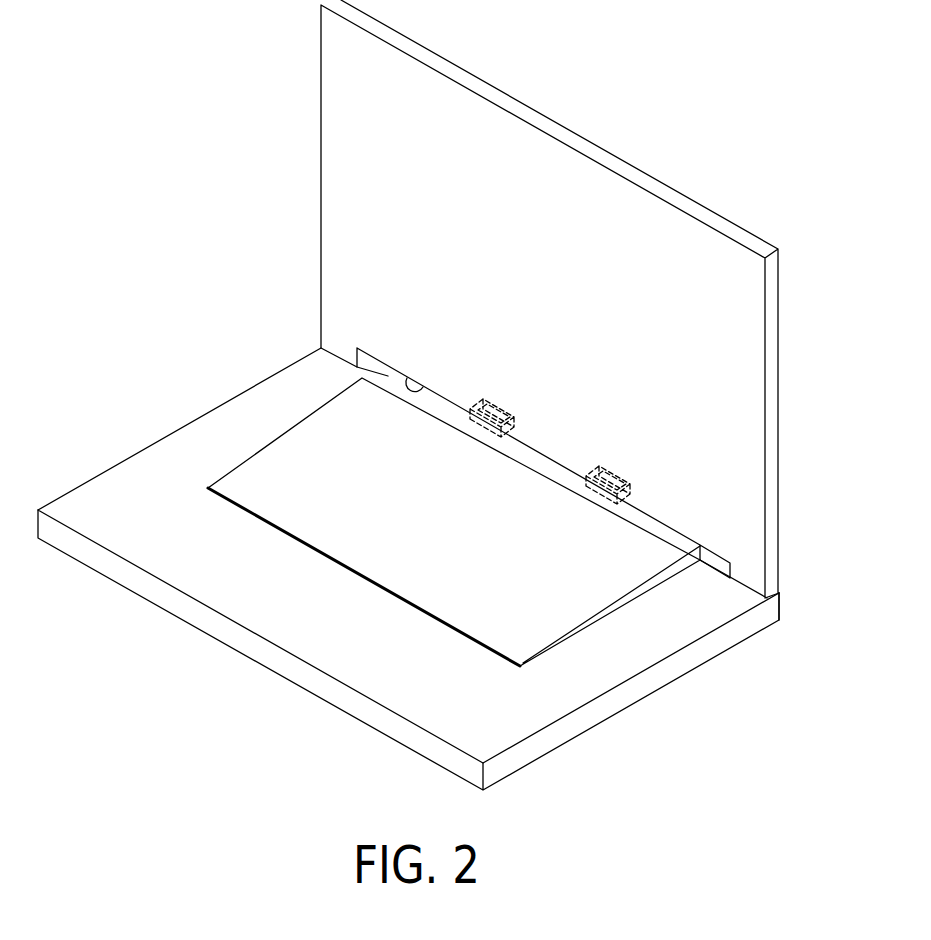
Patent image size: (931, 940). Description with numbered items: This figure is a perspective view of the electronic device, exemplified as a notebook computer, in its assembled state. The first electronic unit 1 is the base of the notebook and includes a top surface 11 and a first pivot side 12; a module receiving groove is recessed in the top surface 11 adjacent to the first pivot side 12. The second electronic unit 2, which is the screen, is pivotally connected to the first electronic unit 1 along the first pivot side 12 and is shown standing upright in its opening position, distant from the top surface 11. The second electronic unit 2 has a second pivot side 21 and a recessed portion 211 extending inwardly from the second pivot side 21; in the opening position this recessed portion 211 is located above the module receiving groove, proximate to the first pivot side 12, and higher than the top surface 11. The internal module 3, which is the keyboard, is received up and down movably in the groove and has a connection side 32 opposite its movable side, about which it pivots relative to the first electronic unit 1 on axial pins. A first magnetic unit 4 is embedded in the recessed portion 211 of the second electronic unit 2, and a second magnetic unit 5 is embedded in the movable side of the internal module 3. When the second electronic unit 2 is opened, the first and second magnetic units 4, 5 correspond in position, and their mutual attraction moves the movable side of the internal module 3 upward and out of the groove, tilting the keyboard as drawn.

The first electronic unit 1 is at (196, 628).
The top surface 11 is at (135, 498).
The first pivot side 12 is at (780, 603).
The second electronic unit 2 is at (540, 160).
The second pivot side 21 is at (338, 357).
The recessed portion 211 is at (407, 376).
The internal module 3 is at (450, 577).
The connection side 32 is at (373, 583).
The first magnetic unit 4 is at (643, 481).
The second magnetic unit 5 is at (626, 511).